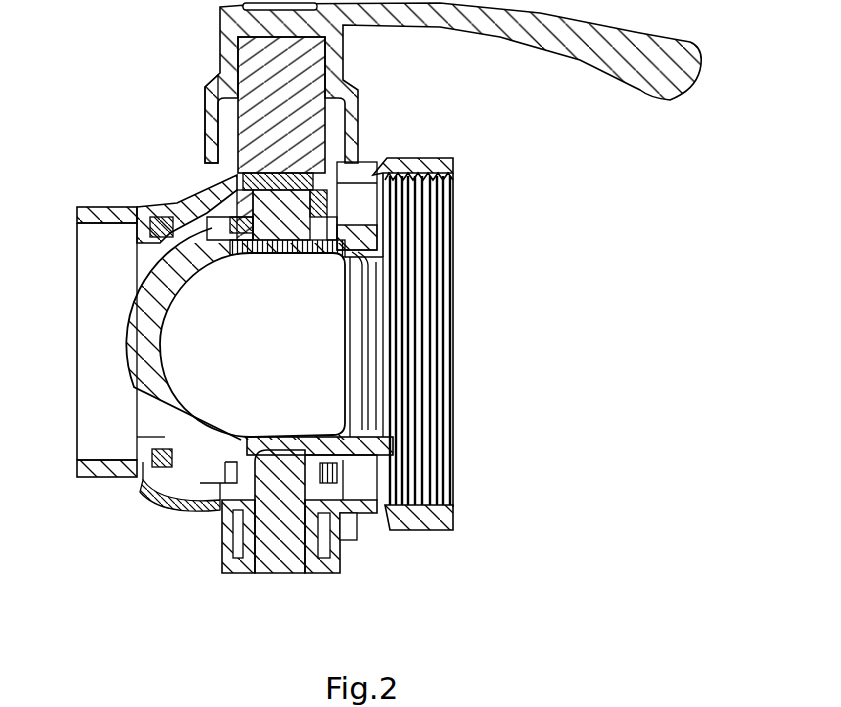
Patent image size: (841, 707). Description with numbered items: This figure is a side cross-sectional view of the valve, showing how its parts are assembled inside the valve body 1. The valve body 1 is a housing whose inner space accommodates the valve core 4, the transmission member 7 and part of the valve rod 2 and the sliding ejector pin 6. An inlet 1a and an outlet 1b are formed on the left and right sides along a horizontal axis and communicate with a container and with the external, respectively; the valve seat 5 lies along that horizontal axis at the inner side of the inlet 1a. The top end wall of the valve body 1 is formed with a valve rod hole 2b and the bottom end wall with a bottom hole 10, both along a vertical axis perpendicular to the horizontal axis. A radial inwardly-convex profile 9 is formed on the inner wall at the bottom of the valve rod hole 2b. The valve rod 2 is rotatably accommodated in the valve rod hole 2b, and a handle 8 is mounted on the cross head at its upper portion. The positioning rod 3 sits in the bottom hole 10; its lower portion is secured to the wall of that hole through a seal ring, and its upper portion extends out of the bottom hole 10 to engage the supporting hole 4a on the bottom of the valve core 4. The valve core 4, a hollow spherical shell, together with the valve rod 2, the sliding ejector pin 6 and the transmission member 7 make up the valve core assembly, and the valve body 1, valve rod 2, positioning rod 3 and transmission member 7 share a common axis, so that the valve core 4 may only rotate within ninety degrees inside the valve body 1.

The valve body 1 is at (135, 207).
The inlet 1a is at (110, 257).
The outlet 1b is at (447, 313).
The valve rod 2 is at (205, 88).
The valve rod hole 2b is at (205, 120).
The positioning rod 3 is at (343, 560).
The valve core 4 is at (135, 330).
The supporting hole 4a is at (157, 510).
The valve seat 5 is at (137, 477).
The sliding ejector pin 6 is at (355, 160).
The transmission member 7 is at (447, 187).
The handle 8 is at (217, 43).
The radial inwardly-convex profile 9 is at (340, 200).
The bottom hole 10 is at (220, 550).